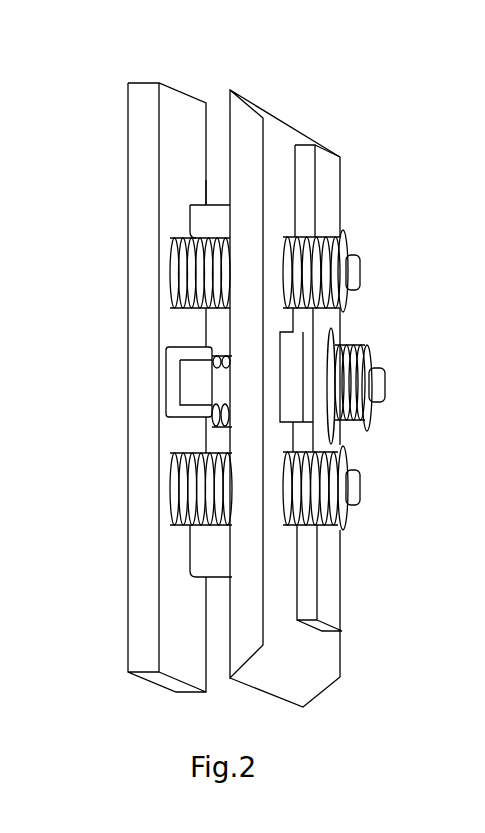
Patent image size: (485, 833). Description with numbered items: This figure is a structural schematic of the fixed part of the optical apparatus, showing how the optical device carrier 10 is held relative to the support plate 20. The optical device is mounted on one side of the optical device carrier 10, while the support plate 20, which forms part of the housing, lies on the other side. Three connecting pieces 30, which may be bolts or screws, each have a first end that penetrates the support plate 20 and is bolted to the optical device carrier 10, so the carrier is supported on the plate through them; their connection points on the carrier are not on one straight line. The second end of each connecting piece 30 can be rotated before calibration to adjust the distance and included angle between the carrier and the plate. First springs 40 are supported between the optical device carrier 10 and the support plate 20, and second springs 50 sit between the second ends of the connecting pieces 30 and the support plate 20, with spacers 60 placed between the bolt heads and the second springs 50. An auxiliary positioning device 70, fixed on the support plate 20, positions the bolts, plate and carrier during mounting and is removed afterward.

The optical device carrier 10 is at (150, 135).
The support plate 20 is at (248, 135).
The connecting piece 30 is at (311, 383).
The first spring 40 is at (172, 260).
The second spring 50 is at (285, 488).
The spacer 60 is at (348, 228).
The auxiliary positioning device 70 is at (308, 188).